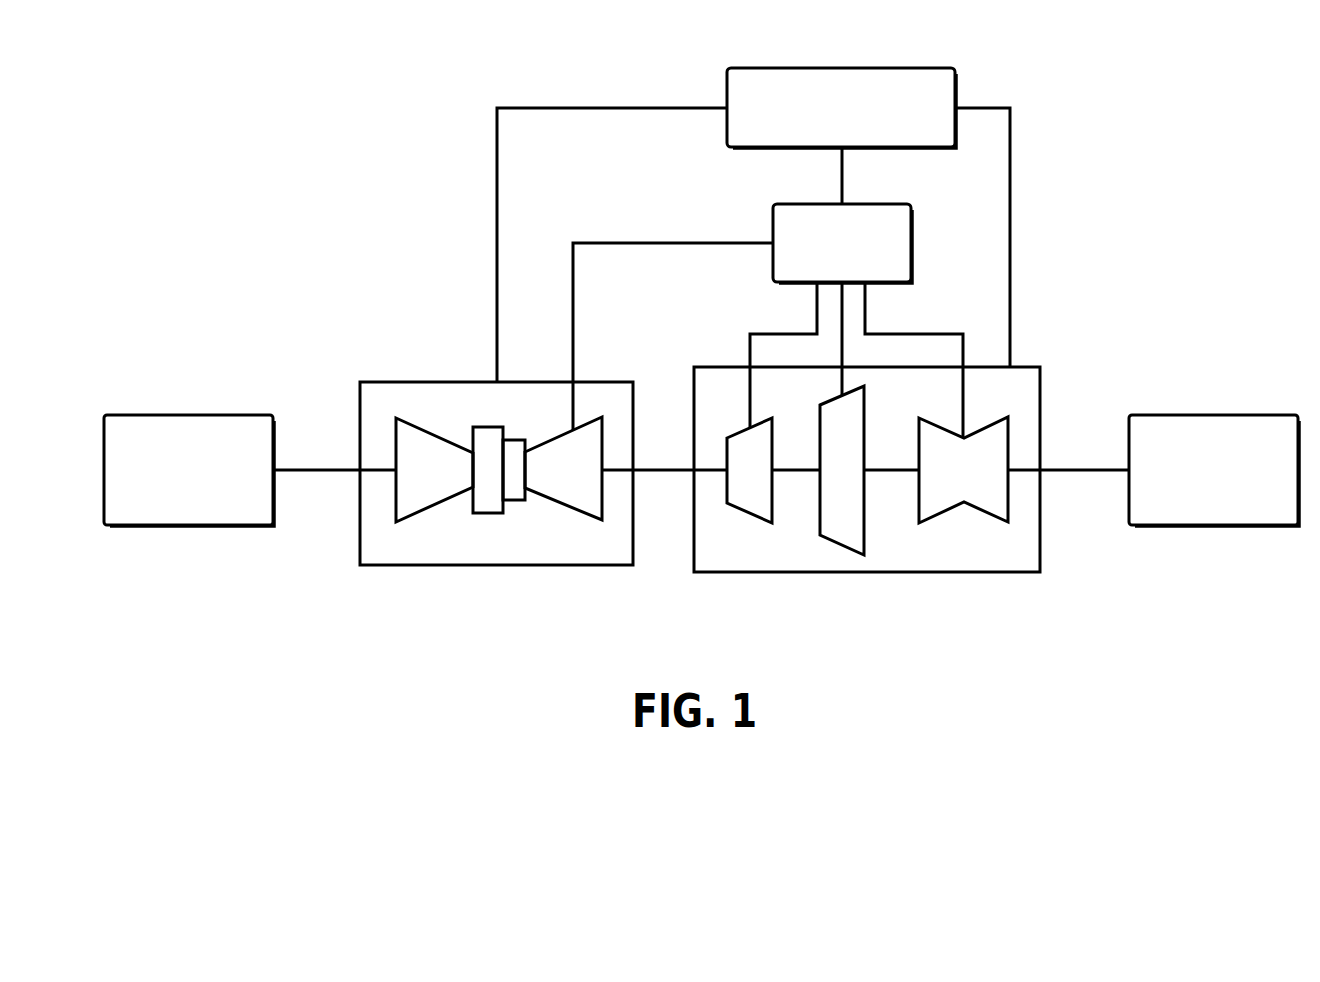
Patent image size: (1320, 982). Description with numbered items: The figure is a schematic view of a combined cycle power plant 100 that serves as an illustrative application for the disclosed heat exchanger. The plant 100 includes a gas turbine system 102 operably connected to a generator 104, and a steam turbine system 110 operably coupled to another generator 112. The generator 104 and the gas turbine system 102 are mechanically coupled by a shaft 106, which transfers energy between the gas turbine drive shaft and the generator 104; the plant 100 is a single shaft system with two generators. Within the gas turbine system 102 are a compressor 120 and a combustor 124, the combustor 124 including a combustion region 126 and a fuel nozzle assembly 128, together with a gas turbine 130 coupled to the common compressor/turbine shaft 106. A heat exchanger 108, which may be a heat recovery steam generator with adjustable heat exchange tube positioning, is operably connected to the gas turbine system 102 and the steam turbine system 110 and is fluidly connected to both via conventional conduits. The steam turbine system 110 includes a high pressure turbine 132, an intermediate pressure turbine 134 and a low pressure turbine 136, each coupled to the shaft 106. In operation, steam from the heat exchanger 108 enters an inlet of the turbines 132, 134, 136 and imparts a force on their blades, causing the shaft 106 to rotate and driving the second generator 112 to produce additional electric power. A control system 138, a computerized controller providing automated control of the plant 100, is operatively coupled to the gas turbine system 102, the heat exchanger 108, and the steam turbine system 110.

The combined cycle power plant 100 is at (183, 176).
The gas turbine system 102 is at (615, 558).
The generator 104 is at (165, 502).
The shaft 106 is at (317, 470).
The heat exchanger 108 is at (819, 270).
The steam turbine system 110 is at (1018, 569).
The generator 112 is at (1190, 502).
The compressor 120 is at (422, 513).
The combustor 124 is at (492, 474).
The combustion region 126 is at (515, 440).
The fuel nozzle assembly 128 is at (483, 427).
The gas turbine 130 is at (550, 482).
The high pressure turbine 132 is at (752, 512).
The intermediate pressure turbine 134 is at (838, 542).
The low pressure turbine 136 is at (948, 508).
The control system 138 is at (818, 136).